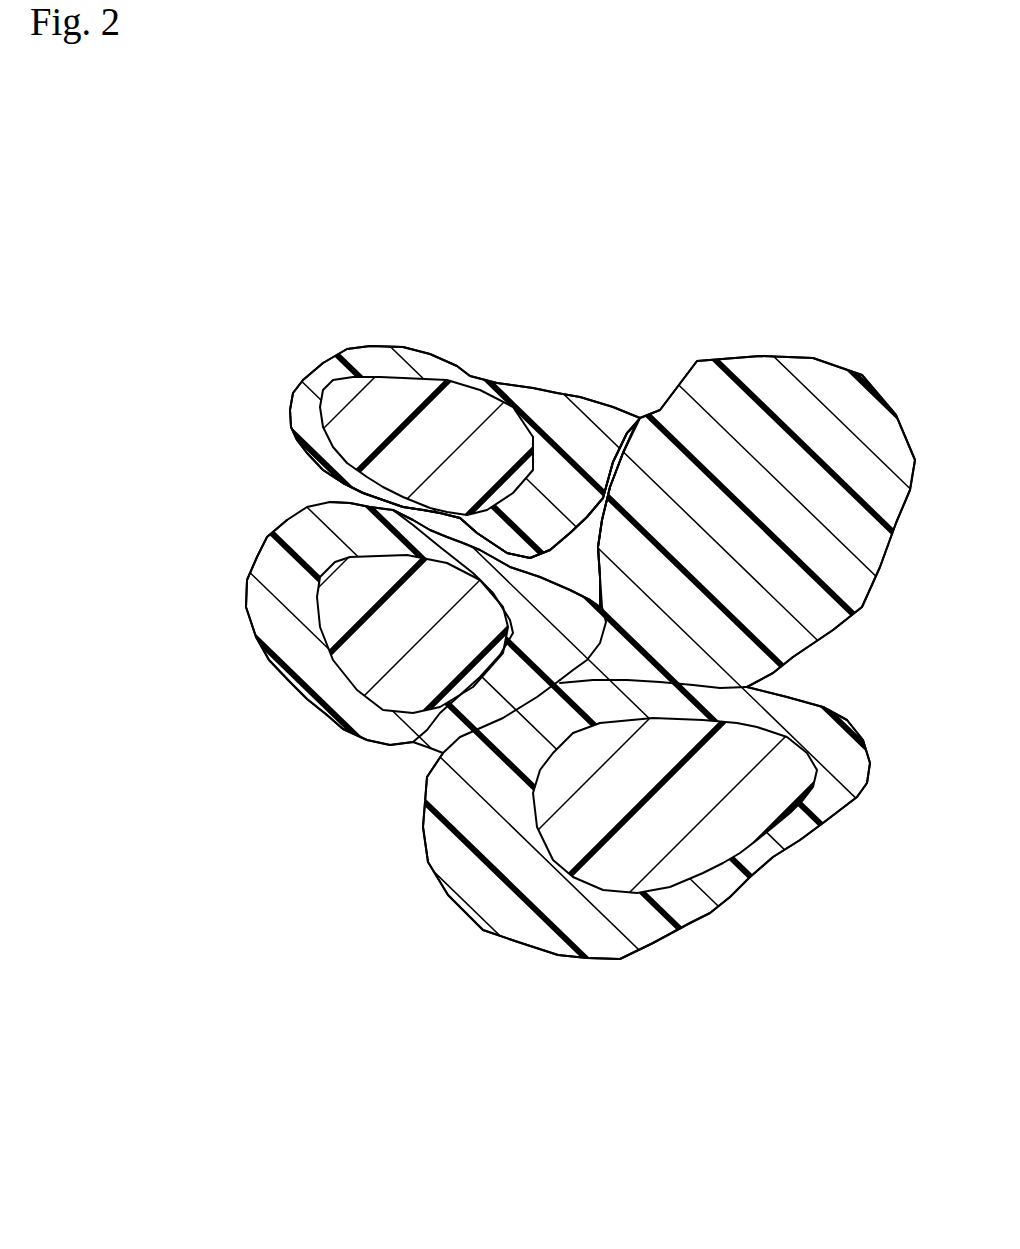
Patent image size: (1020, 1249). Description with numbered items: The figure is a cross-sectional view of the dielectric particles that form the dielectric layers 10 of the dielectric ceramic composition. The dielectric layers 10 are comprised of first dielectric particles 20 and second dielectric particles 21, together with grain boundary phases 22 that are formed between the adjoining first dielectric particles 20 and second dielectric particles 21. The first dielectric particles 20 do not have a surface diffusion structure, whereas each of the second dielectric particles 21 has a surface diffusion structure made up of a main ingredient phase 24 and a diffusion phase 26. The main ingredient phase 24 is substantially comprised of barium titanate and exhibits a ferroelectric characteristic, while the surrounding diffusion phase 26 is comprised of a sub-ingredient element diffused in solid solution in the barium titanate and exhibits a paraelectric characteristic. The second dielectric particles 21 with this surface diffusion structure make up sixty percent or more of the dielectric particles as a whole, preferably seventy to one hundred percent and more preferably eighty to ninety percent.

The dielectric layers 10 is at (632, 283).
The first dielectric particles 20 is at (808, 362).
The second dielectric particles 21 is at (375, 340).
The grain boundary phases 22 is at (580, 547).
The main ingredient phase 24 is at (455, 427).
The diffusion phase 26 is at (325, 377).